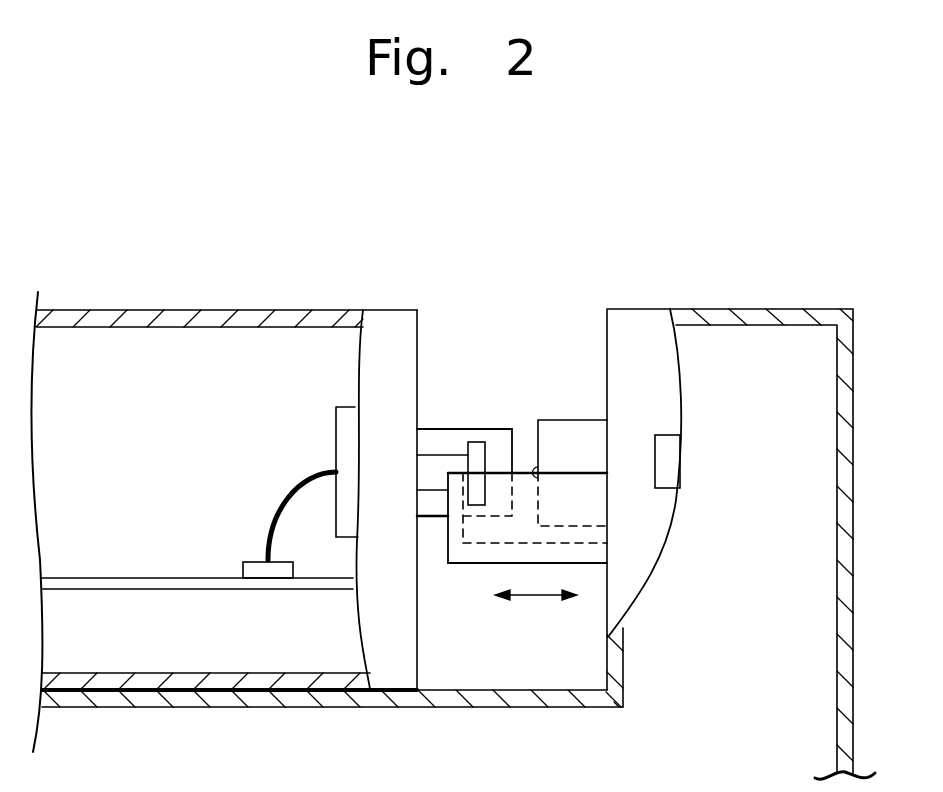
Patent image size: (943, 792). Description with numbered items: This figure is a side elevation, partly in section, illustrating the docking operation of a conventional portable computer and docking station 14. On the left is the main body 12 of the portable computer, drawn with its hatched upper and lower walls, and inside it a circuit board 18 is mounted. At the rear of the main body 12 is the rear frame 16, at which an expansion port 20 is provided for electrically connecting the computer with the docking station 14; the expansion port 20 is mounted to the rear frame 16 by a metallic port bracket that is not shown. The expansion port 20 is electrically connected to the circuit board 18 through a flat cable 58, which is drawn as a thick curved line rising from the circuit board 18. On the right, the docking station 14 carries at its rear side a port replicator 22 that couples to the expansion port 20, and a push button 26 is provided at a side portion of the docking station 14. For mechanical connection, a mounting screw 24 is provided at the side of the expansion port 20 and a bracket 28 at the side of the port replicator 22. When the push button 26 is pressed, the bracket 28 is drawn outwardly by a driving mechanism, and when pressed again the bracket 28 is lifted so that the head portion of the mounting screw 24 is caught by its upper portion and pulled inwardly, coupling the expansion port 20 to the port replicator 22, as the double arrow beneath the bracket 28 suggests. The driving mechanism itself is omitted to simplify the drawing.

The main body 12 is at (290, 310).
The docking station 14 is at (743, 309).
The rear frame 16 is at (417, 372).
The circuit board 18 is at (245, 590).
The expansion port 20 is at (513, 434).
The port replicator 22 is at (567, 432).
The mounting screw 24 is at (440, 463).
The push button 26 is at (673, 460).
The bracket 28 is at (463, 565).
The flat cable 58 is at (290, 500).